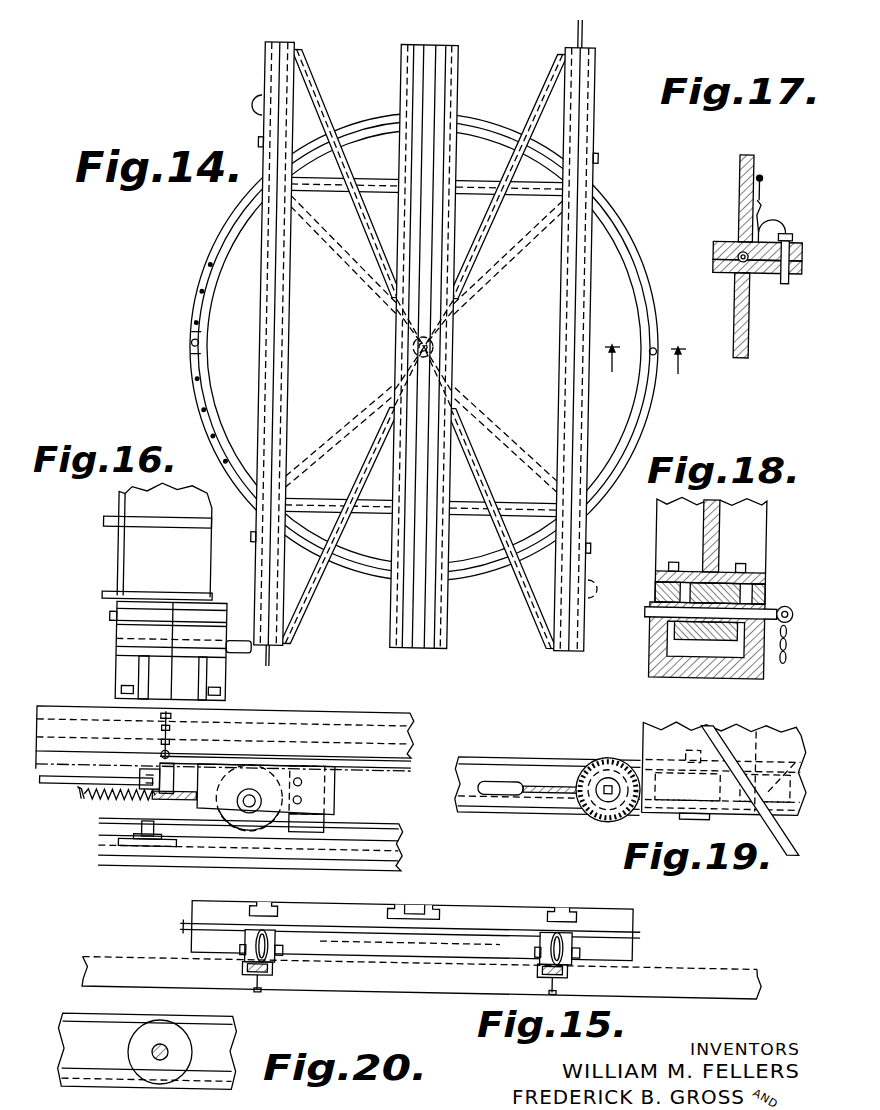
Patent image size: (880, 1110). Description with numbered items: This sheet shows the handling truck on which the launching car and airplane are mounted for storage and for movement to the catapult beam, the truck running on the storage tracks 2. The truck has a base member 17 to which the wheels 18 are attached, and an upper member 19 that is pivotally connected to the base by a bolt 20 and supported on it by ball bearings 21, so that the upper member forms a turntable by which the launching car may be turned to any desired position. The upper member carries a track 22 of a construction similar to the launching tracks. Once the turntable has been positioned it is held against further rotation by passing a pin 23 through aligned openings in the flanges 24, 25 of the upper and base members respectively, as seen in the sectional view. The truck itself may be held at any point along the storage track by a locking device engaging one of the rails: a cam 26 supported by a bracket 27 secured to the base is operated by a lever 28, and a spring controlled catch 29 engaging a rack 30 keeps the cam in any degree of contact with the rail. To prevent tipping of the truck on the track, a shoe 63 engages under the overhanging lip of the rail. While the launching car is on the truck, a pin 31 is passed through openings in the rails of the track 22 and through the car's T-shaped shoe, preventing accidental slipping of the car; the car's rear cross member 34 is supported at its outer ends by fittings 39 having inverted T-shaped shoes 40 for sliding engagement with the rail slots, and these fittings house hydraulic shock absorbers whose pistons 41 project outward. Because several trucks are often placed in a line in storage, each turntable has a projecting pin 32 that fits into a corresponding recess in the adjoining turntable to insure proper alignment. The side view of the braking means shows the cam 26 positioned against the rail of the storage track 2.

In FIG. 15, the storage tracks 2 is at (240, 965).
In FIG. 20, the storage tracks 2 is at (146, 1051).
In FIG. 14, the base member 17 is at (644, 370).
In FIG. 17, the base member 17 is at (752, 350).
In FIG. 16, the base member 17 is at (400, 800).
In FIG. 19, the base member 17 is at (665, 737).
In FIG. 15, the base member 17 is at (640, 949).
In FIG. 16, the wheels 18 is at (250, 833).
In FIG. 15, the wheels 18 is at (255, 978).
In FIG. 14, the upper member 19 is at (617, 250).
In FIG. 17, the upper member 19 is at (738, 186).
In FIG. 16, the upper member 19 is at (415, 742).
In FIG. 15, the upper member 19 is at (495, 912).
In FIG. 14, the bolt 20 is at (440, 348).
In FIG. 15, the bolt 20 is at (455, 960).
In FIG. 17, the ball bearings 21 is at (735, 250).
In FIG. 14, the track 22 is at (287, 313).
In FIG. 18, the track 22 is at (690, 680).
In FIG. 16, the track 22 is at (307, 718).
In FIG. 15, the track 22 is at (270, 898).
In FIG. 14, the pin 23 is at (192, 343).
In FIG. 17, the pin 23 is at (790, 285).
In FIG. 17, the flange 24 is at (800, 245).
In FIG. 17, the flange 25 is at (775, 275).
In FIG. 16, the cam 26 is at (152, 840).
In FIG. 20, the cam 26 is at (175, 1058).
In FIG. 16, the bracket 27 is at (195, 800).
In FIG. 16, the lever 28 is at (63, 786).
In FIG. 19, the lever 28 is at (500, 794).
In FIG. 16, the spring controlled catch 29 is at (98, 801).
In FIG. 14, the rack 30 is at (262, 105).
In FIG. 16, the rack 30 is at (137, 798).
In FIG. 19, the rack 30 is at (588, 826).
In FIG. 18, the pin 31 is at (770, 606).
In FIG. 16, the pin 31 is at (170, 714).
In FIG. 14, the projecting pin 32 is at (585, 40).
In FIG. 18, the rear cross member 34 is at (748, 532).
In FIG. 16, the rear cross member 34 is at (128, 558).
In FIG. 16, the fittings 39 is at (135, 660).
In FIG. 18, the inverted T-shaped shoes 40 is at (668, 640).
In FIG. 16, the pistons 41 is at (243, 653).
In FIG. 16, the shoe 63 is at (297, 835).